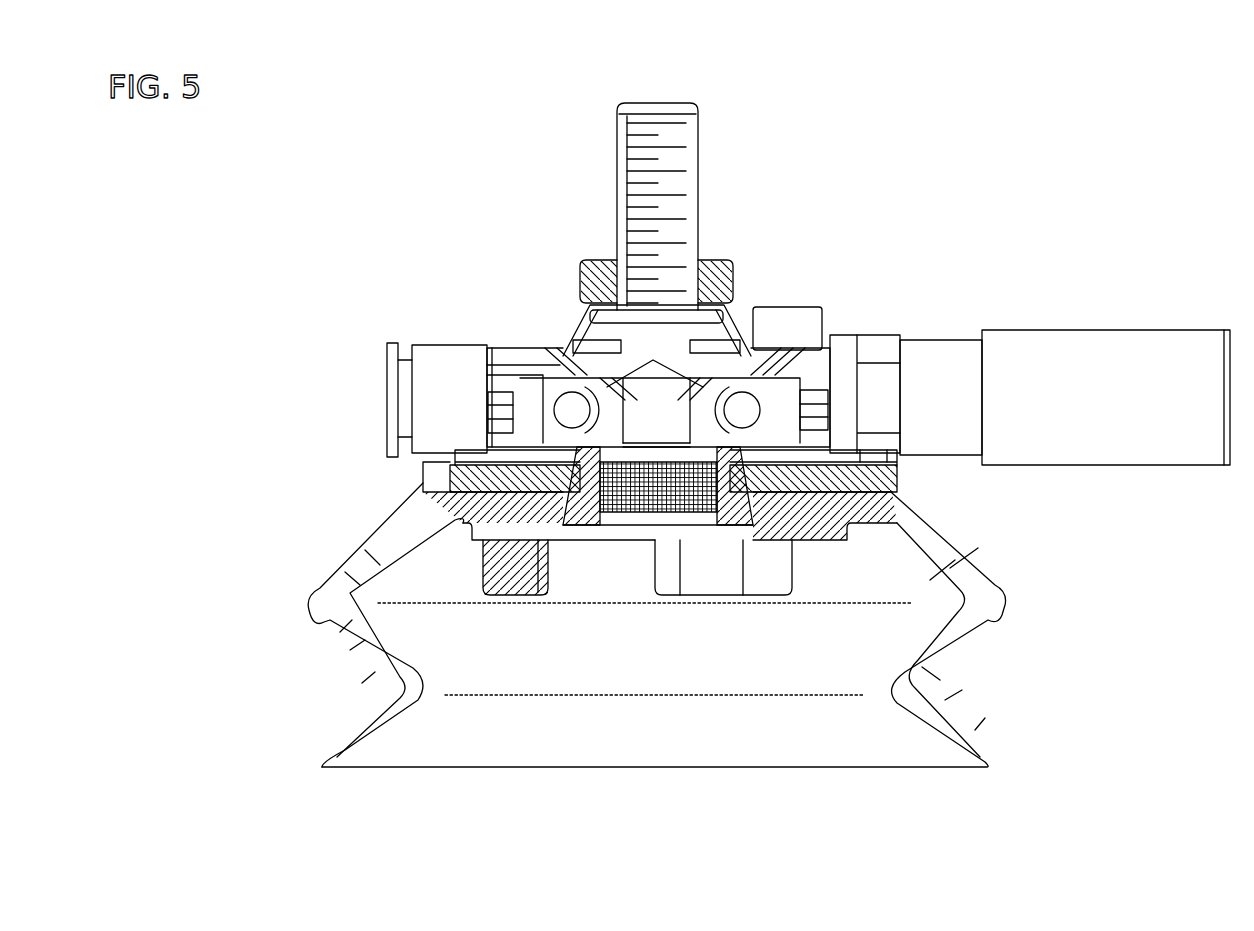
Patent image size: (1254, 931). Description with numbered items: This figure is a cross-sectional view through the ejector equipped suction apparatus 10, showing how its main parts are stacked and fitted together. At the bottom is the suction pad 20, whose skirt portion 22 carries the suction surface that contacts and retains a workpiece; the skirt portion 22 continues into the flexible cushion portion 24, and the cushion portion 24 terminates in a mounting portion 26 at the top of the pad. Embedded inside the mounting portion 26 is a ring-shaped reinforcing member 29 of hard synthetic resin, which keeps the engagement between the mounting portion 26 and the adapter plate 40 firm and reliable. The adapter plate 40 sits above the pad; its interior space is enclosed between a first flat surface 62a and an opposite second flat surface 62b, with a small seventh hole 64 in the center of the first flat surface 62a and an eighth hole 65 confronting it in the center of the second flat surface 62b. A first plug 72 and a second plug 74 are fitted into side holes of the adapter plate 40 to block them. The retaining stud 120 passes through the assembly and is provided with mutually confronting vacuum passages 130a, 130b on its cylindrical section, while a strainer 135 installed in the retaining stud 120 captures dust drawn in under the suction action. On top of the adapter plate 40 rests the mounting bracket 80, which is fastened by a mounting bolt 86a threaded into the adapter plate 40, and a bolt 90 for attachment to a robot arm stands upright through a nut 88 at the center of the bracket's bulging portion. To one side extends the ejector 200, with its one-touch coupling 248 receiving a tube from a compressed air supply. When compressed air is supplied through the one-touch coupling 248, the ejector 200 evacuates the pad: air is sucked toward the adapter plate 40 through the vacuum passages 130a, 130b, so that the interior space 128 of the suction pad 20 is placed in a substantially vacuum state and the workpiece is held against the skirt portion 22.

The ejector equipped suction apparatus 10 is at (529, 190).
The bolt 90 is at (700, 135).
The nut 88 is at (717, 261).
The mounting bracket 80 is at (577, 311).
The mounting bolt 86a is at (781, 310).
The adapter plate 40 is at (841, 341).
The ejector 200 is at (945, 325).
The first flat surface 62a is at (500, 357).
The second flat surface 62b is at (492, 432).
The vacuum passage 130a is at (490, 386).
The vacuum passage 130b is at (855, 381).
The one-touch coupling 248 is at (387, 388).
The second plug 74 is at (490, 403).
The first plug 72 is at (815, 401).
The seventh hole 64 is at (656, 418).
The eighth hole 65 is at (688, 431).
The mounting portion 26 is at (896, 470).
The cushion portion 24 is at (383, 558).
The reinforcing member 29 is at (823, 500).
The retaining stud 120 is at (563, 523).
The strainer 135 is at (630, 512).
The interior space 128 is at (645, 649).
The skirt portion 22 is at (340, 747).
The suction pad 20 is at (1025, 609).